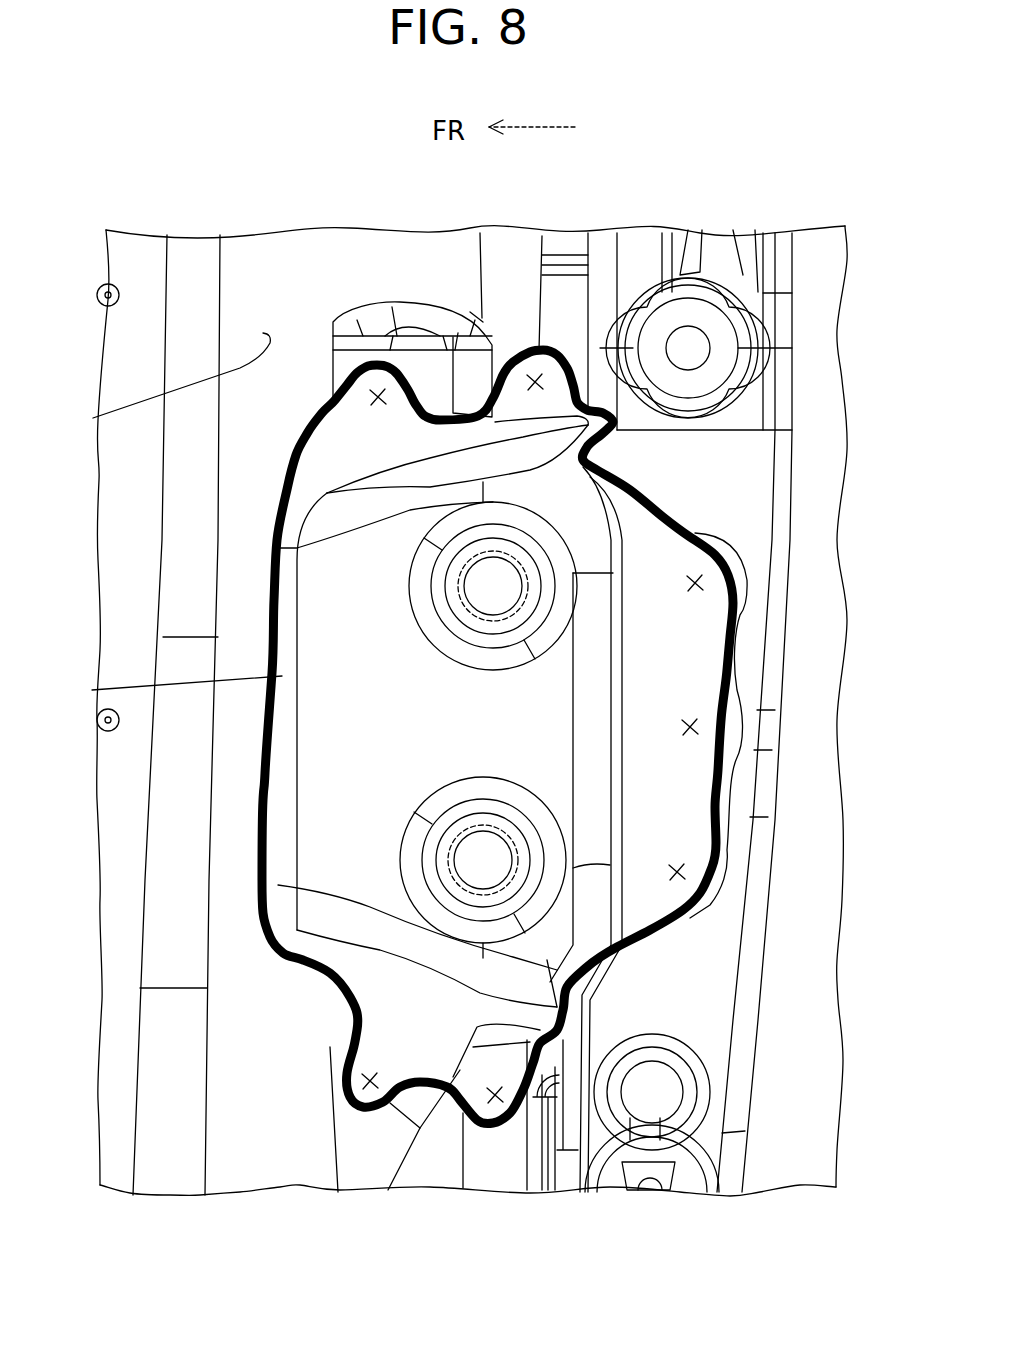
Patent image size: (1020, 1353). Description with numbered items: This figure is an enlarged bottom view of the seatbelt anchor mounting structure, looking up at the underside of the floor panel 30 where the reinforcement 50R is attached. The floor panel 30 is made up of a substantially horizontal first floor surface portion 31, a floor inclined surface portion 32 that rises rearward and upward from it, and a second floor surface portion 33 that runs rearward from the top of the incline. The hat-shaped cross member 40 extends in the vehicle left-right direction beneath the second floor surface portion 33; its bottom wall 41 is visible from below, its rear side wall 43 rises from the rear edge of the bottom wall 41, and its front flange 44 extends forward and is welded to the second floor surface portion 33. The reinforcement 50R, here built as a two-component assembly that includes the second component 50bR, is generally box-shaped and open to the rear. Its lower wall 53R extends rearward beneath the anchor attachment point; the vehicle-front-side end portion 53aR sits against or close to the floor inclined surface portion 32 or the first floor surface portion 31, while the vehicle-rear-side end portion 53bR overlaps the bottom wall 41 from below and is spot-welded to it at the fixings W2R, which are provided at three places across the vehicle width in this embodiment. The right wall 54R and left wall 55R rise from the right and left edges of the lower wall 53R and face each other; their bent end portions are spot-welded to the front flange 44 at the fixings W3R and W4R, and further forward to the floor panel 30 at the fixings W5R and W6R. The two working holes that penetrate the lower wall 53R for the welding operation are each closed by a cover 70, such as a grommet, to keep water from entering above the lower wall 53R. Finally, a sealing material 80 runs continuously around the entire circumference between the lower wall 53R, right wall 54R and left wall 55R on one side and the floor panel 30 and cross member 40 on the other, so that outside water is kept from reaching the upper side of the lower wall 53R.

The floor panel 30 is at (115, 557).
The first floor surface portion 31 is at (112, 345).
The floor inclined surface portion 32 is at (107, 410).
The second floor surface portion 33 is at (510, 268).
The cross member 40 is at (823, 533).
The bottom wall 41 is at (697, 503).
The rear side wall 43 is at (822, 381).
The front flange 44 is at (568, 286).
The reinforcement 50R is at (320, 584).
The second component 50bR is at (292, 882).
The lower wall 53R is at (390, 775).
The vehicle-front-side end portion of the lower wall 53aR is at (104, 692).
The vehicle-rear-side end portion of the lower wall 53bR is at (707, 653).
The right wall 54R is at (440, 473).
The left wall 55R is at (447, 973).
The cover 70 is at (500, 657).
The sealing material 80 is at (317, 995).
The fixing W2R is at (690, 586).
The fixing W3R is at (540, 380).
The fixing W4R is at (494, 1105).
The fixing W5R is at (375, 406).
The fixing W6R is at (368, 1099).